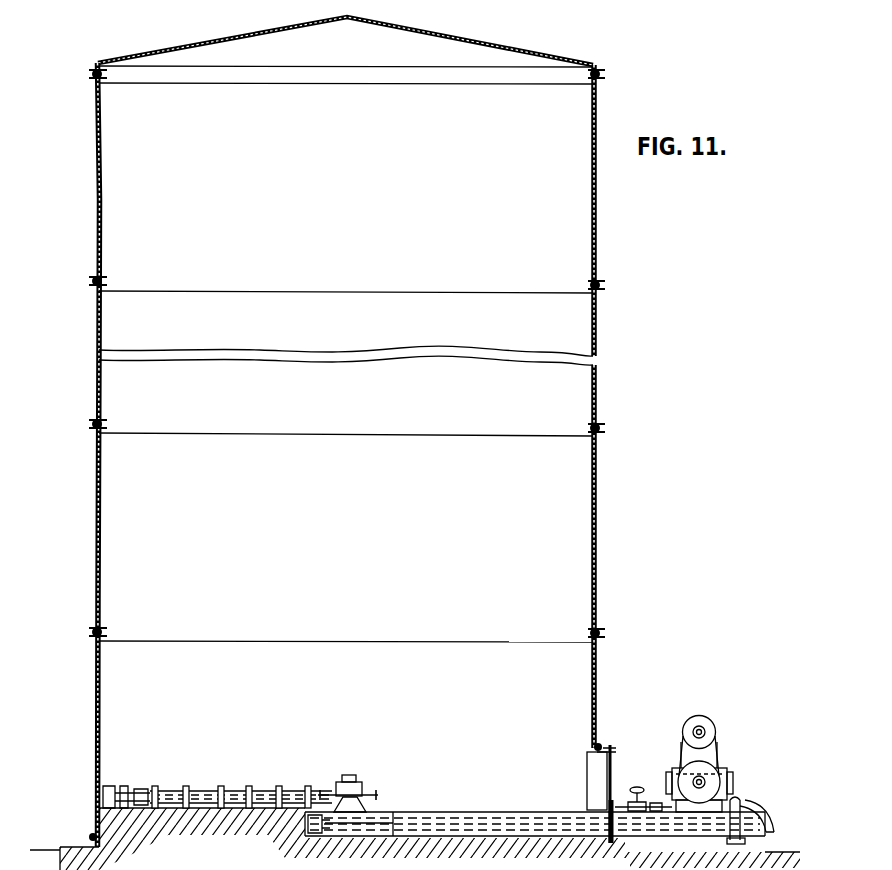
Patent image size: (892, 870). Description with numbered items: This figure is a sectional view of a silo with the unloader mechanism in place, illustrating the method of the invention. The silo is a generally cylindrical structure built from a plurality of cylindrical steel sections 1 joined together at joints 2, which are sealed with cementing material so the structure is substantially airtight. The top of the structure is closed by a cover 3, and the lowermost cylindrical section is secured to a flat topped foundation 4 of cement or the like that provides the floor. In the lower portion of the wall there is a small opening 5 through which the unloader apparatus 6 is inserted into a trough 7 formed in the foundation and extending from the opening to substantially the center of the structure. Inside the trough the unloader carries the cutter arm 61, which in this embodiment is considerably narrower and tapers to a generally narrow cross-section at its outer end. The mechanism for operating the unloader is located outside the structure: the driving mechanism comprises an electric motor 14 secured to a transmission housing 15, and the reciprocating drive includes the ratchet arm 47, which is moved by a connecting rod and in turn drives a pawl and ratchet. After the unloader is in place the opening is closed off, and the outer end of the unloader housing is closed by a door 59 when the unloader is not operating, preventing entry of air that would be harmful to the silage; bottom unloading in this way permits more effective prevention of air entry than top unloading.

The cylindrical steel section 1 is at (601, 206).
The joint 2 is at (605, 282).
The cover 3 is at (559, 58).
The foundation 4 is at (70, 843).
The opening 5 is at (606, 762).
The unloader apparatus 6 is at (491, 807).
The trough 7 is at (383, 812).
The electric motor 14 is at (707, 716).
The transmission housing 15 is at (728, 782).
The ratchet arm 47 is at (654, 800).
The door 59 is at (752, 808).
The cutter arm 61 is at (169, 789).